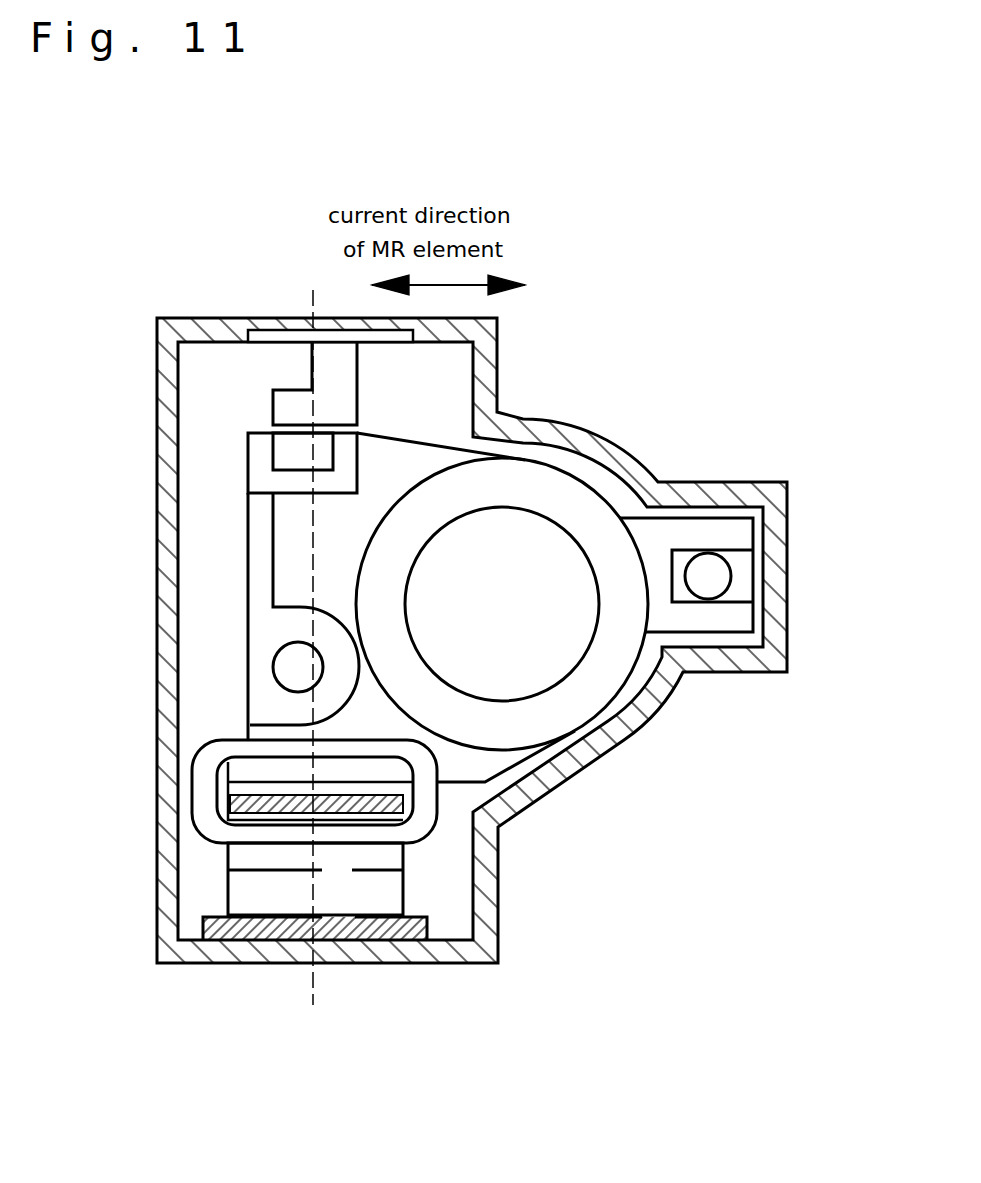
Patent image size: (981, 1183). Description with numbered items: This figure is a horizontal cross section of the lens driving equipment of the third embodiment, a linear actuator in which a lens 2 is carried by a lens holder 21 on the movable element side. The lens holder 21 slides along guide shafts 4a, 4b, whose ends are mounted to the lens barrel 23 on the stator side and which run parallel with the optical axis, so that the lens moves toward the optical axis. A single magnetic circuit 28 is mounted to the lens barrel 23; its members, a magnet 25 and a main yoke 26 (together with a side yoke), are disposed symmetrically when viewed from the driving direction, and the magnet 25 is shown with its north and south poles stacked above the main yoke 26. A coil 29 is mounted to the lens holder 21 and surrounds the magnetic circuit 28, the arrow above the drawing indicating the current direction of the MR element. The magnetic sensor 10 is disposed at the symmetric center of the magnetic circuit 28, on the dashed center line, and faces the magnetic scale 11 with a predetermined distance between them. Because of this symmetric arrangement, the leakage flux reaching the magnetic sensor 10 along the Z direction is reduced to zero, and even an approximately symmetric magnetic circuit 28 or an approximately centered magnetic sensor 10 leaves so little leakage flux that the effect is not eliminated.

The lens 2 is at (497, 600).
The guide shaft 4a is at (297, 667).
The guide shaft 4b is at (703, 575).
The magnetic sensor 10 is at (308, 408).
The magnetic scale 11 is at (295, 447).
The lens holder 21 is at (563, 700).
The lens barrel 23 is at (157, 447).
The magnet 25 is at (283, 892).
The main yoke 26 is at (292, 940).
The magnetic circuit 28 is at (215, 1053).
The coil 29 is at (200, 807).